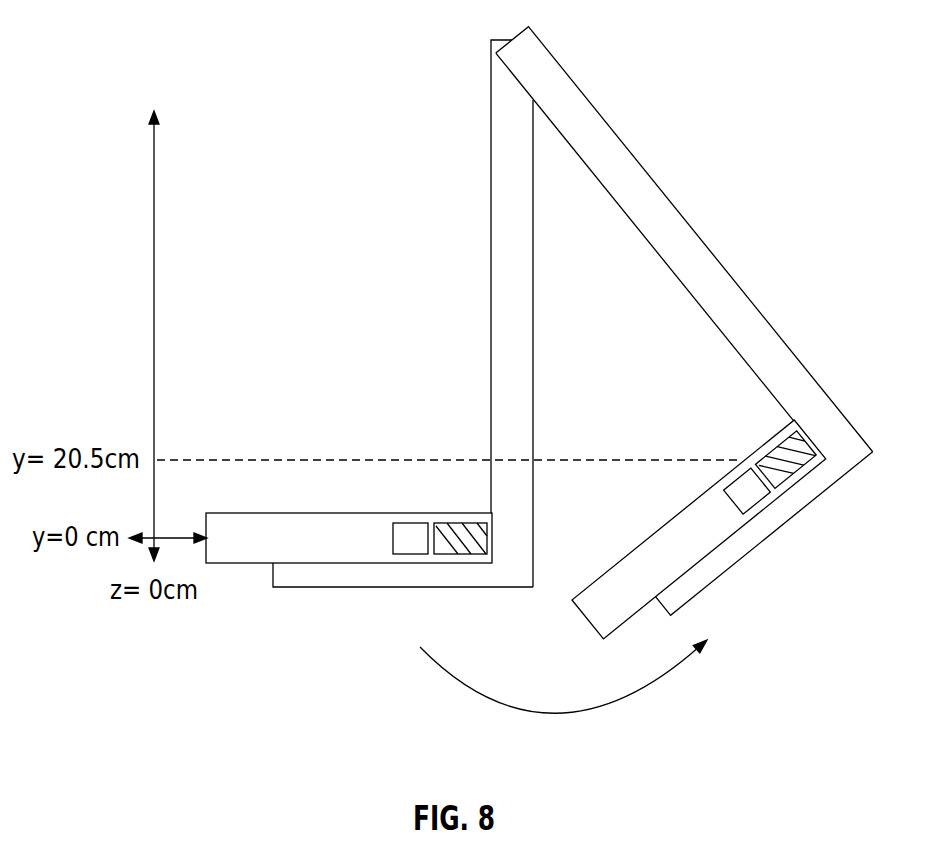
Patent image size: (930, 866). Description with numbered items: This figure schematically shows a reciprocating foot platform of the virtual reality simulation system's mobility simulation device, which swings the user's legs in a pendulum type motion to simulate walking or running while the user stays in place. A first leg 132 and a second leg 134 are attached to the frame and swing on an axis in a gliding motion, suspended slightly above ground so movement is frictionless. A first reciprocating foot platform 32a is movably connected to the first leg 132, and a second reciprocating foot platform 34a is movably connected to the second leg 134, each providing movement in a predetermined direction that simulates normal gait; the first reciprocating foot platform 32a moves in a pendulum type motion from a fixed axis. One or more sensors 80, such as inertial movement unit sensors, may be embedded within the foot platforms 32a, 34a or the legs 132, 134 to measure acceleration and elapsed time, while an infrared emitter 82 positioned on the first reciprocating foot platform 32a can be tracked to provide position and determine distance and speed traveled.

The first leg 132 is at (515, 393).
The second leg 134 is at (687, 243).
The first reciprocating foot platform 32a is at (398, 572).
The second reciprocating foot platform 34a is at (753, 532).
The sensor 80 is at (460, 532).
The infrared emitter 82 is at (408, 532).